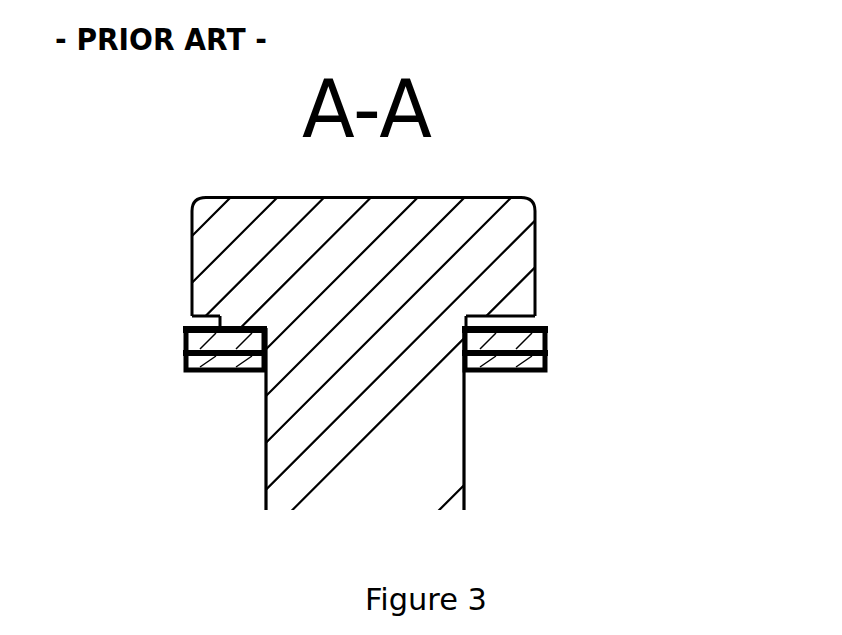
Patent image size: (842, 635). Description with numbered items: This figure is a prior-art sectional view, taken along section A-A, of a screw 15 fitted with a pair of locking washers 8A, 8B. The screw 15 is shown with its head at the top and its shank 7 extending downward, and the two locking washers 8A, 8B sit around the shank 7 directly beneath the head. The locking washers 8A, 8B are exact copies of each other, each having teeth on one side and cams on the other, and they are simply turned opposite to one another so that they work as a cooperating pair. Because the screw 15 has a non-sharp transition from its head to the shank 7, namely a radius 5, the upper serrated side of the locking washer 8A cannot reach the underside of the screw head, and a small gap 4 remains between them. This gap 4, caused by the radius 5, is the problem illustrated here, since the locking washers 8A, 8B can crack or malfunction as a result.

The screw 15 is at (415, 230).
The gap 4 is at (503, 320).
The radius 5 is at (461, 327).
The shank 7 is at (390, 458).
The locking washer 8A is at (533, 335).
The locking washer 8B is at (533, 358).